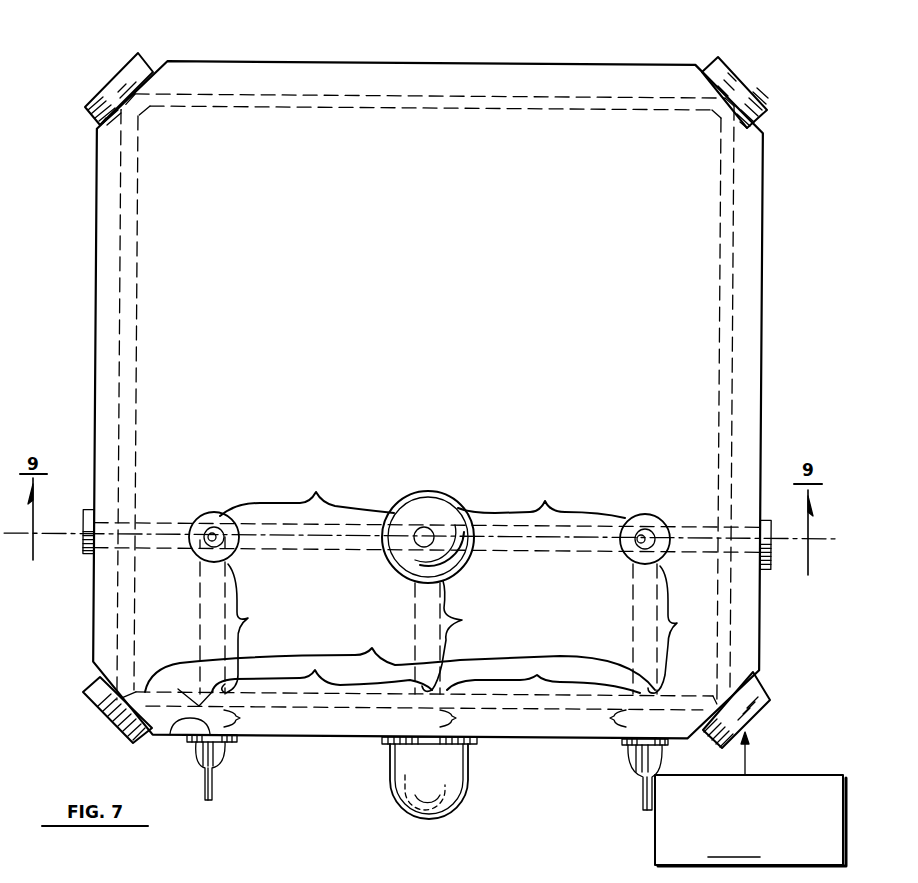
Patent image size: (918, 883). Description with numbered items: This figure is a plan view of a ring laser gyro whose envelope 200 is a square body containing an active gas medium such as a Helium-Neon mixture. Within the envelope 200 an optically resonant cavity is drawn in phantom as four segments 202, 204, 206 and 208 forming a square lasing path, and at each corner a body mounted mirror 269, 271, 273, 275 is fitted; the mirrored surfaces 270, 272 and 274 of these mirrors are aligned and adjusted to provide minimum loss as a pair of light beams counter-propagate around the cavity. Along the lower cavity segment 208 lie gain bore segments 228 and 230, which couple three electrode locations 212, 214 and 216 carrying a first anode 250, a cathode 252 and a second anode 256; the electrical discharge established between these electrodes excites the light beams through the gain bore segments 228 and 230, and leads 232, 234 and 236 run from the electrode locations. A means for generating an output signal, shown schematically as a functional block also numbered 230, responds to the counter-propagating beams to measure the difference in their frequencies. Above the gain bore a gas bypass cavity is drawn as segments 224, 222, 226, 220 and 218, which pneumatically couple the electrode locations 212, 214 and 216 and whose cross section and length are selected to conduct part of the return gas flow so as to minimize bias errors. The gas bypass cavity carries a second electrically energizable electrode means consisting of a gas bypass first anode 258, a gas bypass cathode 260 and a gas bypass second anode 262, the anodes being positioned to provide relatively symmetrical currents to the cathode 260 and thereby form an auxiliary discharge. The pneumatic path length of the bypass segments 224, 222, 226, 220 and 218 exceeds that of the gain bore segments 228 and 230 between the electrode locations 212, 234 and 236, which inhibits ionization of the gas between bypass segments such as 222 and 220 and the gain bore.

The envelope 200 is at (405, 63).
The optically resonant cavity segment 202 is at (125, 308).
The optically resonant cavity segment 204 is at (515, 103).
The optically resonant cavity segment 206 is at (716, 318).
The optically resonant cavity segment 208 is at (417, 669).
The electrode location 212 is at (172, 737).
The electrode location 214 is at (428, 735).
The electrode location 216 is at (657, 736).
The gas bypass cavity segment 218 is at (674, 629).
The gas bypass cavity segment 220 is at (541, 499).
The gas bypass cavity segment 222 is at (307, 493).
The gas bypass cavity segment 224 is at (245, 628).
The gas bypass cavity segment 226 is at (457, 637).
The gain bore segment 228 is at (322, 670).
The gain bore segment 230 is at (646, 759).
The lead 232 is at (255, 716).
The electrode location 234 is at (468, 716).
The electrode location 236 is at (606, 716).
The first anode 250 is at (222, 758).
The cathode 252 is at (448, 765).
The second anode 256 is at (635, 750).
The gas bypass first anode 258 is at (212, 530).
The gas bypass cathode 260 is at (428, 530).
The gas bypass second anode 262 is at (645, 535).
The body mounted mirror 269 is at (112, 704).
The mirrored surface 270 is at (140, 690).
The corner mount 271 is at (125, 85).
The mirrored surface 272 is at (140, 107).
The body mounted mirror 273 is at (723, 84).
The mirrored surface 274 is at (718, 108).
The body mounted mirror 275 is at (753, 730).